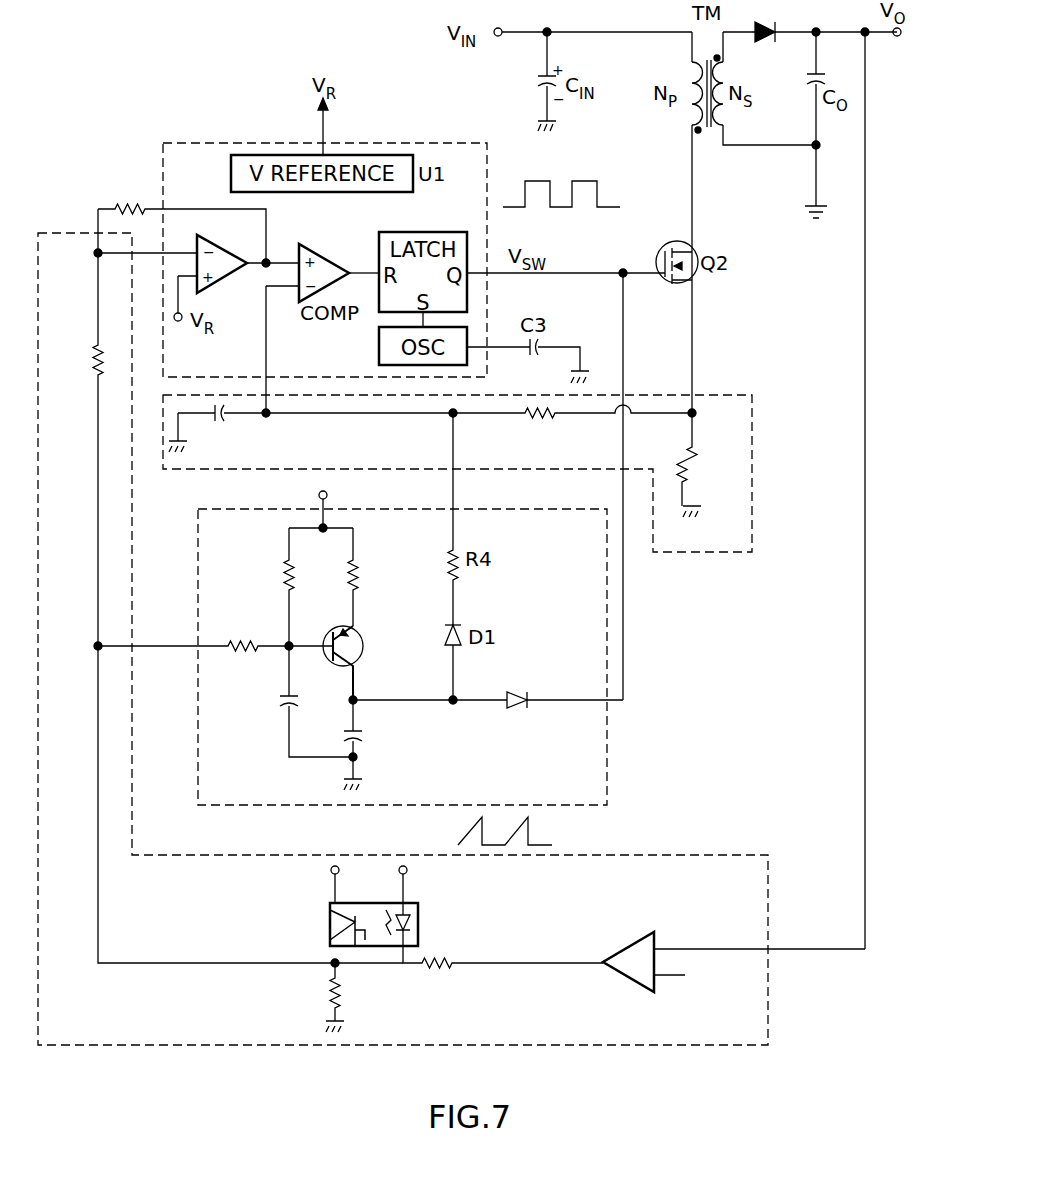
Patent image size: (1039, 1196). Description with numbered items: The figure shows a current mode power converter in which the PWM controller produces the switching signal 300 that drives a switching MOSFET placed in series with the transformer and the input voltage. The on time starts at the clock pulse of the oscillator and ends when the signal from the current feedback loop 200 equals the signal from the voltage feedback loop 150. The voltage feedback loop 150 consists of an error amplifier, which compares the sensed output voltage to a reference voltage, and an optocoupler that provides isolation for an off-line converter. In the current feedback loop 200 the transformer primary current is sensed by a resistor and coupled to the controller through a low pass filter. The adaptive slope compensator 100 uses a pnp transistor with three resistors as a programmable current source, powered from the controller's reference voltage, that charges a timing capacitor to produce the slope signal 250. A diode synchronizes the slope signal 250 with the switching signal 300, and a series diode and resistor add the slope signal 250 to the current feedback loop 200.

The adaptive slope compensator 100 is at (615, 722).
The voltage feedback loop 150 is at (684, 1050).
The current feedback loop 200 is at (472, 419).
The slope signal 250 is at (558, 831).
The switching signal 300 is at (592, 176).